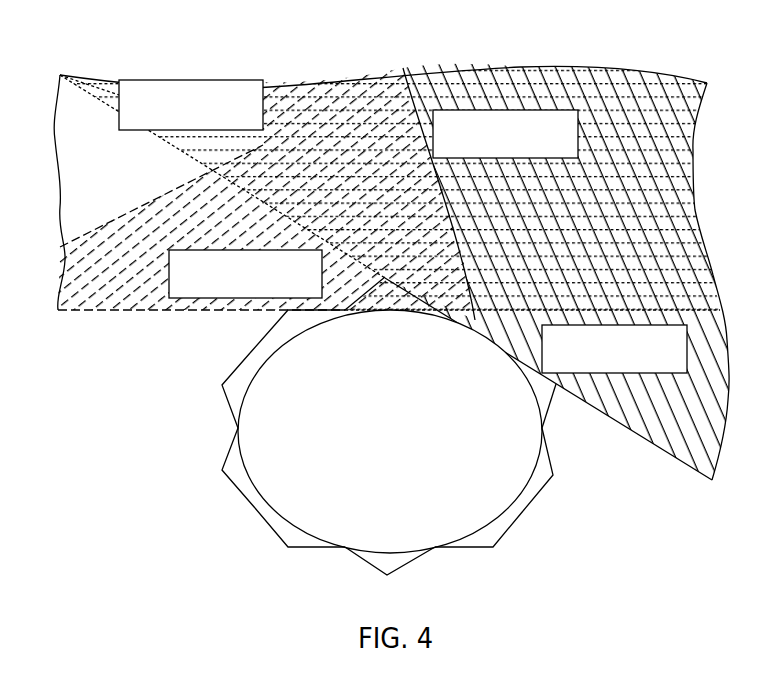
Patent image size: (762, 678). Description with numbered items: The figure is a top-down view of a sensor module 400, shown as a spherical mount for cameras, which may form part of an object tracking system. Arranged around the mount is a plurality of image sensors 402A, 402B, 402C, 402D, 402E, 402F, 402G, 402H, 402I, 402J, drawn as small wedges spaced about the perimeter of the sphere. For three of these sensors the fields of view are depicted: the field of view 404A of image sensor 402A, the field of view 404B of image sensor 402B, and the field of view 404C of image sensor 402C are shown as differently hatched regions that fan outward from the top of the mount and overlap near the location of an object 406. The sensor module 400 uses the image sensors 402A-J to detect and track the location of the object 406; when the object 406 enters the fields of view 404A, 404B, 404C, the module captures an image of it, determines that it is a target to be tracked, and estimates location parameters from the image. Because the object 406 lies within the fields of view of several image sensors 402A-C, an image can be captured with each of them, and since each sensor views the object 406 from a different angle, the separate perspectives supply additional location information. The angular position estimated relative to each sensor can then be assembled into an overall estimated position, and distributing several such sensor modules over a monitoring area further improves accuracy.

The sensor module 400 is at (488, 508).
The image sensor 402A is at (277, 323).
The image sensor 402B is at (387, 298).
The image sensor 402C is at (475, 320).
The image sensor 402D is at (548, 413).
The image sensor 402E is at (543, 487).
The image sensor 402F is at (493, 547).
The image sensor 402G is at (366, 561).
The image sensor 402H is at (272, 528).
The image sensor 402I is at (223, 470).
The image sensor 402J is at (228, 402).
The field of view 404A is at (381, 339).
The field of view 404B is at (381, 339).
The field of view 404C is at (381, 339).
The object 406 is at (538, 130).